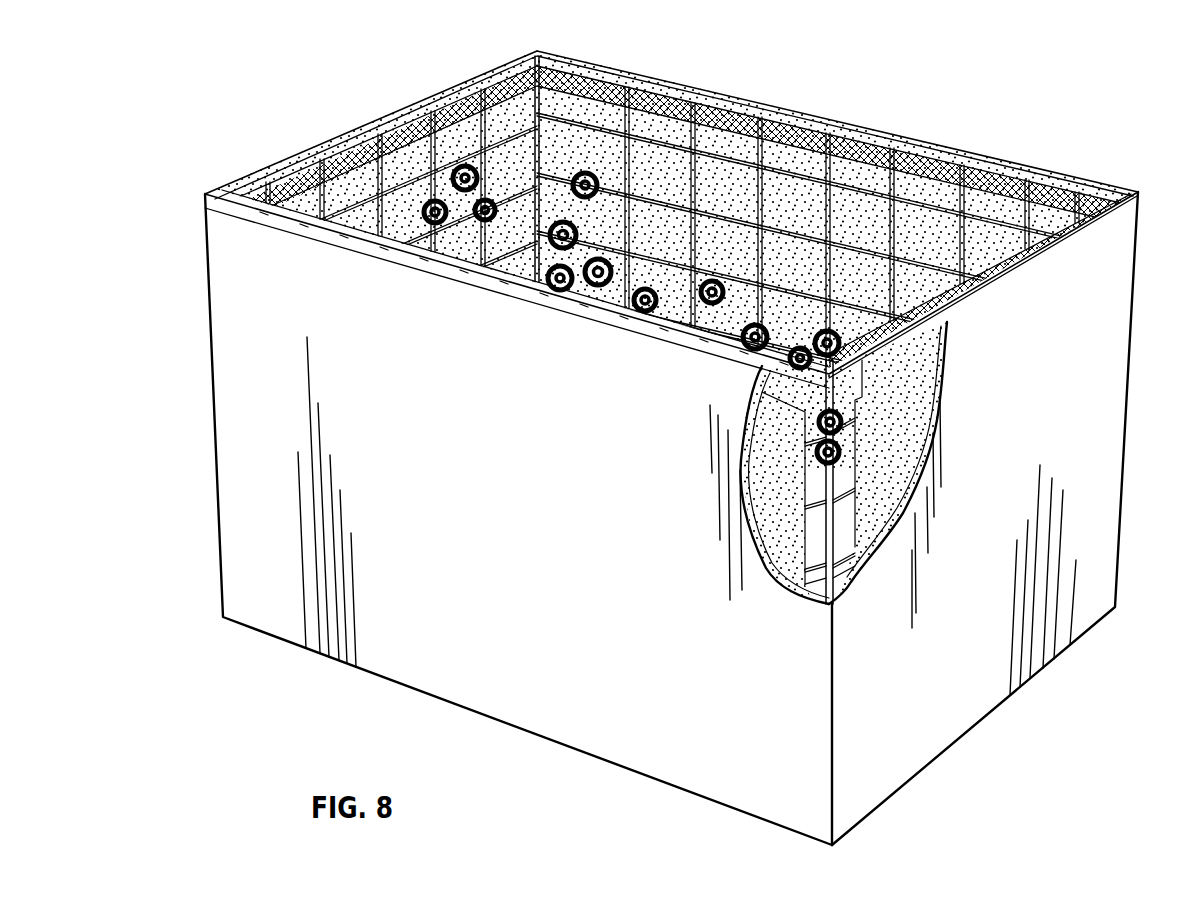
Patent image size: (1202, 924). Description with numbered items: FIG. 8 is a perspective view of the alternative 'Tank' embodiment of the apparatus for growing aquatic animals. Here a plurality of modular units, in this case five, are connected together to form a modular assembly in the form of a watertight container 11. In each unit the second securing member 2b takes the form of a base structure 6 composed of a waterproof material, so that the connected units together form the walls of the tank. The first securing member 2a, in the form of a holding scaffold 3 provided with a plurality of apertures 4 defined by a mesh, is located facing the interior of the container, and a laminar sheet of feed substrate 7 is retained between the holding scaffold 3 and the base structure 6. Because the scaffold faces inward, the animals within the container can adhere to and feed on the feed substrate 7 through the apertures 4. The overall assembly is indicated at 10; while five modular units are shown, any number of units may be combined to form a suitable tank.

The container assembly 10 is at (699, 434).
The watertight container 11 is at (1057, 695).
The first securing member 2a is at (690, 120).
The second securing member 2b is at (1102, 253).
The holding scaffold 3 is at (748, 112).
The apertures 4 is at (842, 538).
The base structure 6 is at (524, 58).
The feed substrate 7 is at (352, 178).